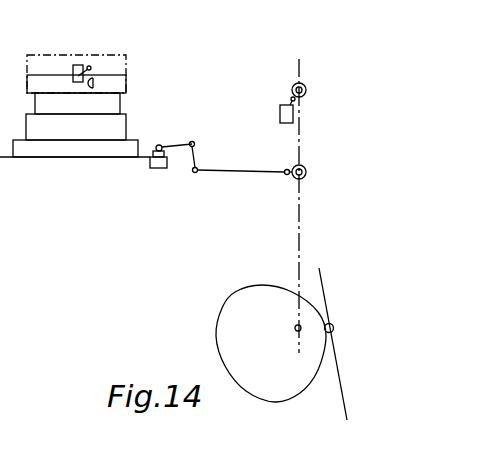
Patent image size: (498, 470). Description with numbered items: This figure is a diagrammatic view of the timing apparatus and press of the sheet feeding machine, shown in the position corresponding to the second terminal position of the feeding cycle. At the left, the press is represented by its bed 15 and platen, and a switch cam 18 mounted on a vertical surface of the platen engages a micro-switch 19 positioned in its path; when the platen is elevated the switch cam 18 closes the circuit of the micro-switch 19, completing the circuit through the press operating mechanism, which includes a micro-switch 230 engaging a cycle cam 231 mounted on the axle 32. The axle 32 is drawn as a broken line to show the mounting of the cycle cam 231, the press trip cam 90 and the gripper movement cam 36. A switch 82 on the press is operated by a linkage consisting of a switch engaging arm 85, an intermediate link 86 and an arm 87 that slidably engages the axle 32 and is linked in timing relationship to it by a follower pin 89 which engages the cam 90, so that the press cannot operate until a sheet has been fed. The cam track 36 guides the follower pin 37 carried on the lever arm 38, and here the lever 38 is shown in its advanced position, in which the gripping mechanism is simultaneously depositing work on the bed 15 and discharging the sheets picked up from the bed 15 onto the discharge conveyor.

The bed 15 is at (83, 152).
The switch cam 18 is at (93, 83).
The micro-switch 19 is at (80, 65).
The axle 32 is at (300, 226).
The cam track 36 is at (232, 295).
The follower pin 37 is at (333, 323).
The lever arm 38 is at (340, 372).
The switch 82 is at (152, 161).
The switch engaging arm 85 is at (176, 146).
The intermediate link 86 is at (186, 160).
The arm 87 is at (242, 173).
The follower pin 89 is at (289, 167).
The cam 90 is at (306, 171).
The micro-switch 230 is at (293, 114).
The cycle cam 231 is at (306, 89).